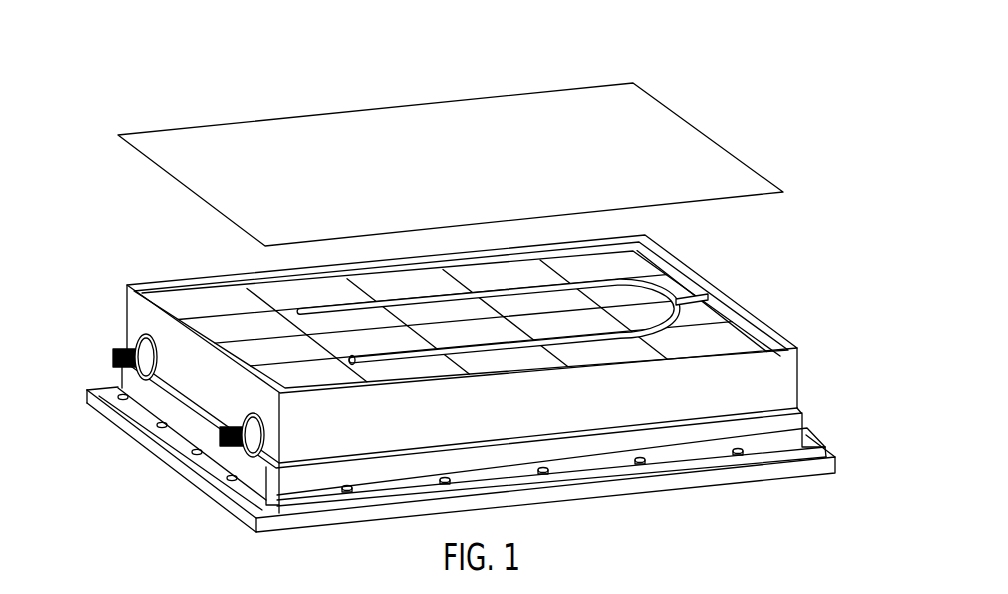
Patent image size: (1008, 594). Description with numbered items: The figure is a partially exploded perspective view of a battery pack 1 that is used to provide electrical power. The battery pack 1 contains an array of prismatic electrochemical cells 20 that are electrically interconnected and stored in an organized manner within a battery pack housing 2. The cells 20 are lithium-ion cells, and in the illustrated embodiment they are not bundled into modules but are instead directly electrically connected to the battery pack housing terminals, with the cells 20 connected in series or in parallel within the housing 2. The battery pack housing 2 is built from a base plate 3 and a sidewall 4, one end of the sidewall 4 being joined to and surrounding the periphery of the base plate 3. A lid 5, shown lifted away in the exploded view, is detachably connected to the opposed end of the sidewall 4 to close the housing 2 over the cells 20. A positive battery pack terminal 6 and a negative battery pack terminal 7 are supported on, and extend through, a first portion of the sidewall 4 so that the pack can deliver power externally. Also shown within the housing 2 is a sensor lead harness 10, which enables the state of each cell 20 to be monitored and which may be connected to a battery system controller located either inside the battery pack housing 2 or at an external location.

The battery pack 1 is at (247, 62).
The battery pack housing 2 is at (89, 262).
The base plate 3 is at (838, 456).
The sidewall 4 is at (777, 388).
The lid 5 is at (666, 127).
The positive battery pack terminal 6 is at (113, 352).
The negative battery pack terminal 7 is at (220, 438).
The sensor lead harness 10 is at (683, 288).
The electrochemical cells 20 is at (272, 292).